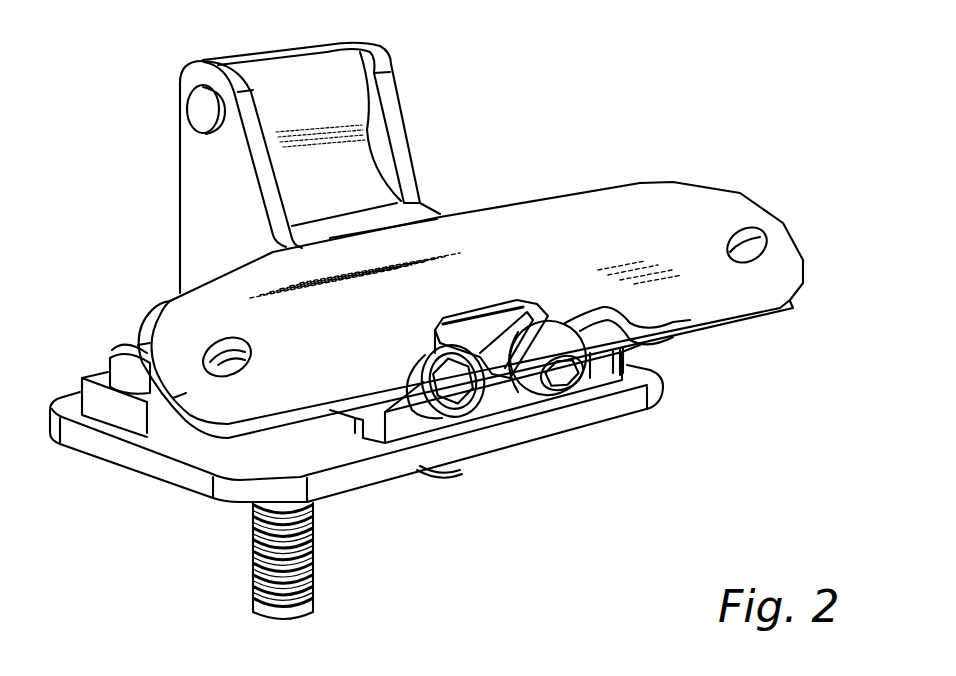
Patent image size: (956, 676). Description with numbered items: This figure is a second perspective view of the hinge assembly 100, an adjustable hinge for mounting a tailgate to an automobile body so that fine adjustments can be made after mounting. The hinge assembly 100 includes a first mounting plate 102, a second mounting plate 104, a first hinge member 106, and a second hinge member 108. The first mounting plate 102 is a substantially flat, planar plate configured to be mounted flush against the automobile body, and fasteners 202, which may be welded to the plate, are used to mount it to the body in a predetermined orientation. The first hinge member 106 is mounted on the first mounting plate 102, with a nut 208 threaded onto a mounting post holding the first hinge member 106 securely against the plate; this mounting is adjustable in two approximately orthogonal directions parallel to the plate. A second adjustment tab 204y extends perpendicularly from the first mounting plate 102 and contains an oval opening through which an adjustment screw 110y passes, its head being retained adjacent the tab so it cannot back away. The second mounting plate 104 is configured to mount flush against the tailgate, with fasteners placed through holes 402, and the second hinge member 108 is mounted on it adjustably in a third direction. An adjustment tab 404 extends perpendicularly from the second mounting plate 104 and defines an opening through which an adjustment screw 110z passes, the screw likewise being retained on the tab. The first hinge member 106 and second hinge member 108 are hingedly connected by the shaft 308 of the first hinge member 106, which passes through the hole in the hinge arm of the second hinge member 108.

The hinge assembly 100 is at (665, 132).
The first mounting plate 102 is at (188, 477).
The second mounting plate 104 is at (486, 304).
The first hinge member 106 is at (251, 147).
The second hinge member 108 is at (305, 178).
The adjustment screw 110y is at (483, 400).
The adjustment screw 110z is at (588, 373).
The fastener 202 is at (310, 547).
The second adjustment tab 204y is at (400, 428).
The nut 208 is at (113, 370).
The shaft 308 is at (203, 110).
The hole 402 is at (753, 240).
The adjustment tab 404 is at (557, 323).